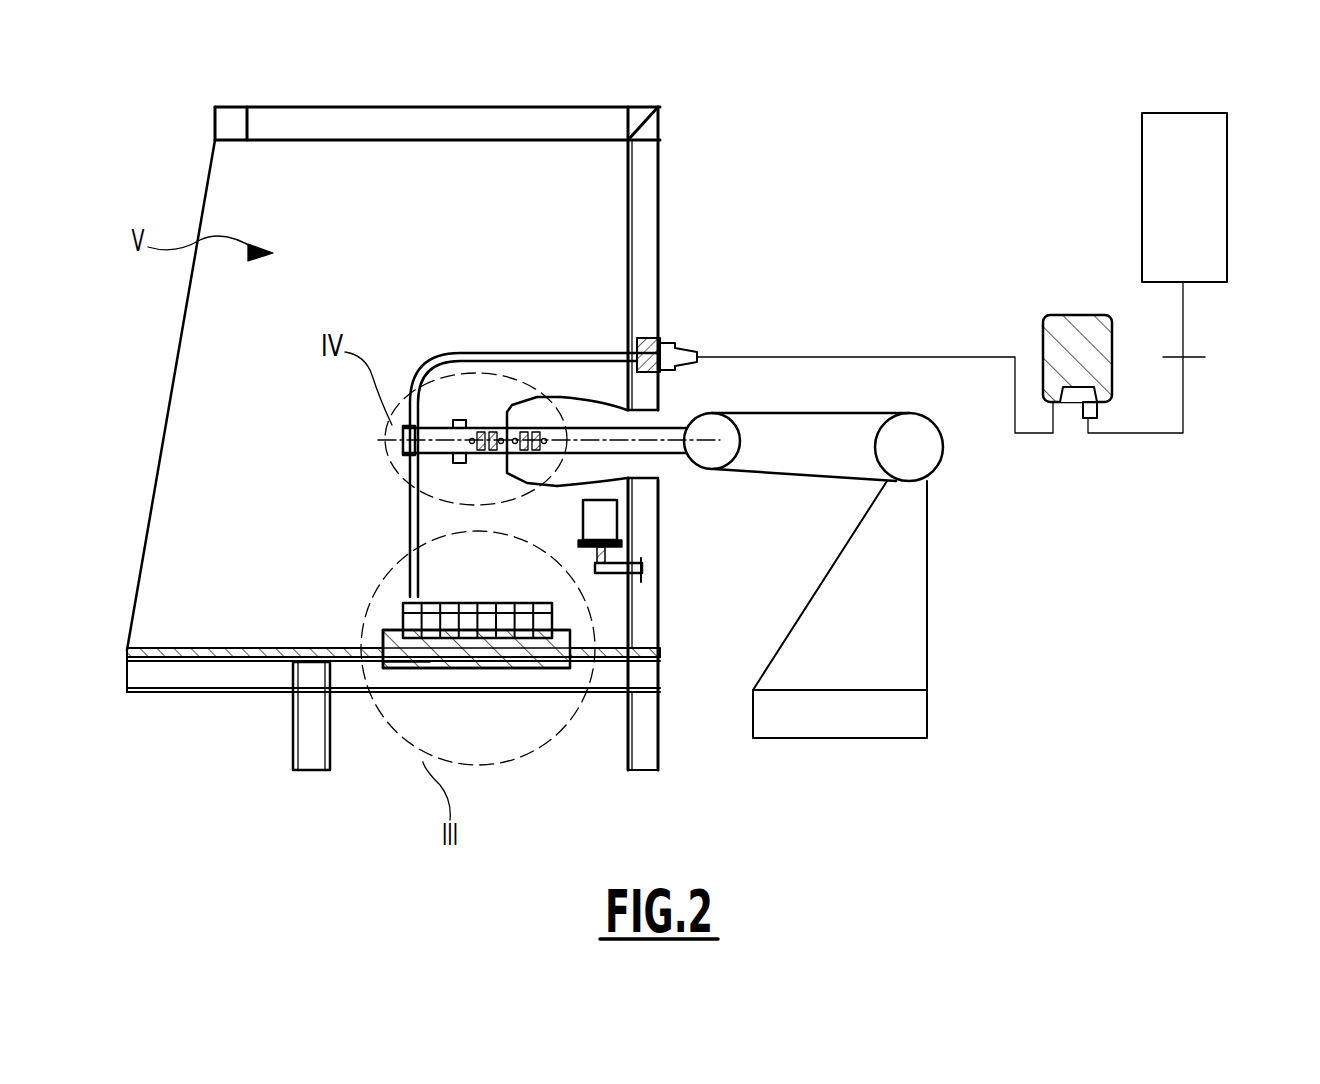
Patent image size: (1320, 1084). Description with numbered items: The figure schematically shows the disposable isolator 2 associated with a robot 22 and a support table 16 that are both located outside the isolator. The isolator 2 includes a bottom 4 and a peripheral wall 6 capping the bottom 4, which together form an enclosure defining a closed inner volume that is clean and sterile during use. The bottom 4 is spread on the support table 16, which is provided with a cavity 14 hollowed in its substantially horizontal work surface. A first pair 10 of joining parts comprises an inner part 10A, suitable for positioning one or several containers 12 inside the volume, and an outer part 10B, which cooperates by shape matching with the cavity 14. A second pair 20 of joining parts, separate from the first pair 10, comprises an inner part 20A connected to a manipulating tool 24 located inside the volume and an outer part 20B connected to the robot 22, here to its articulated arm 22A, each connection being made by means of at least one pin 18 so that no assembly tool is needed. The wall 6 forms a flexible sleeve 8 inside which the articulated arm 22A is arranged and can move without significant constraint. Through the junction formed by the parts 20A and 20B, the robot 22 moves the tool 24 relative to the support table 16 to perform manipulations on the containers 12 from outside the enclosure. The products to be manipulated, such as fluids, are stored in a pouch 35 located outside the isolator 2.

The isolator 2 is at (162, 150).
The bottom 4 is at (230, 652).
The peripheral wall 6 is at (168, 407).
The sleeve 8 is at (583, 398).
The first pair of joining parts 10 is at (485, 743).
The inner part 10A is at (567, 636).
The outer part 10B is at (520, 668).
The containers 12 is at (400, 603).
The cavity 14 is at (413, 665).
The support table 16 is at (153, 673).
The pin 18 is at (552, 397).
The second pair of joining parts 20 is at (387, 297).
The inner part 20A is at (495, 437).
The outer part 20B is at (520, 432).
The robot 22 is at (813, 503).
The articulated arm 22A is at (817, 413).
The manipulating tool 24 is at (398, 466).
The pouch 35 is at (1227, 147).